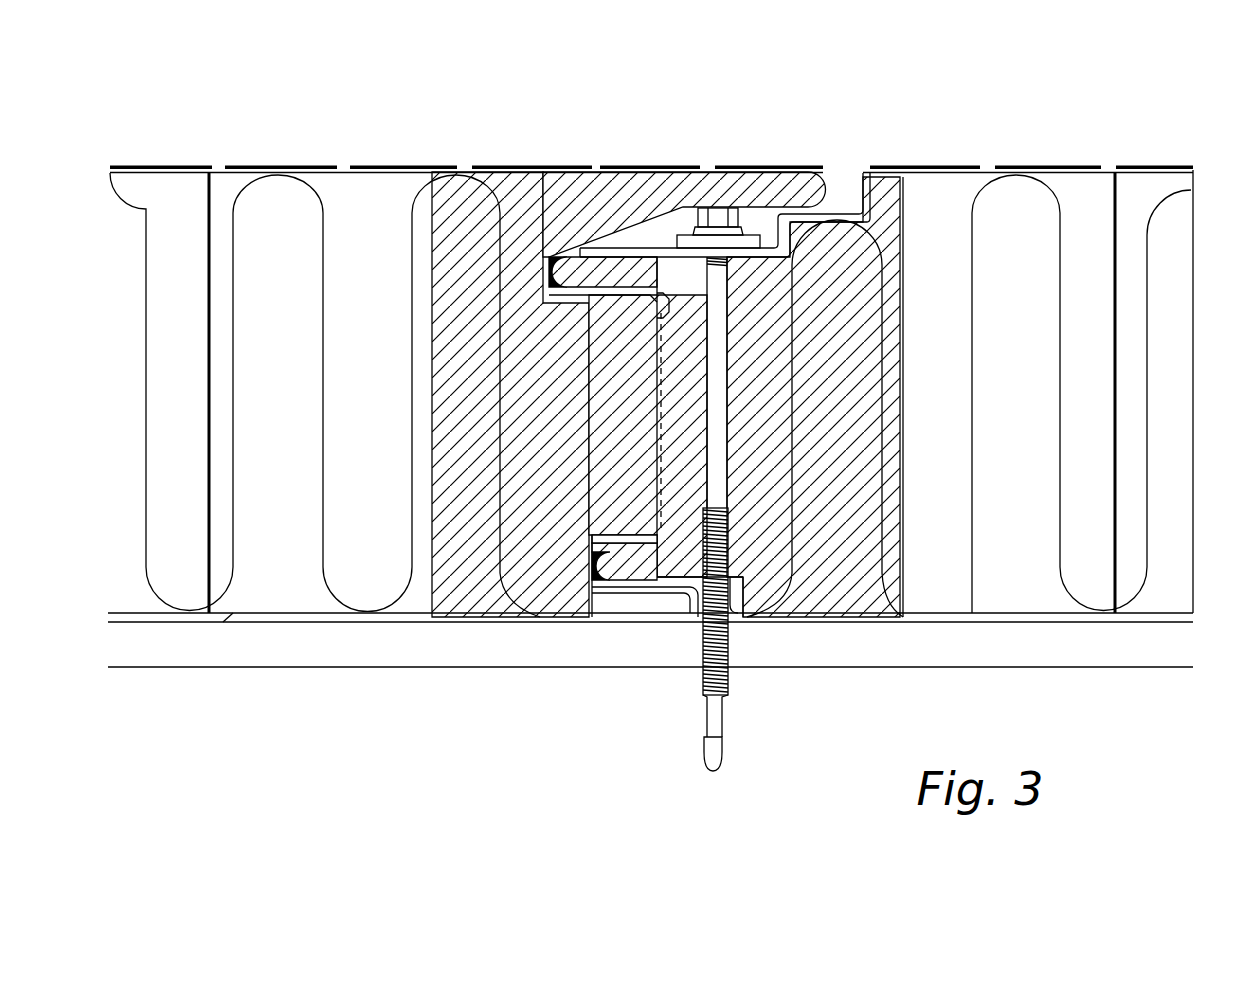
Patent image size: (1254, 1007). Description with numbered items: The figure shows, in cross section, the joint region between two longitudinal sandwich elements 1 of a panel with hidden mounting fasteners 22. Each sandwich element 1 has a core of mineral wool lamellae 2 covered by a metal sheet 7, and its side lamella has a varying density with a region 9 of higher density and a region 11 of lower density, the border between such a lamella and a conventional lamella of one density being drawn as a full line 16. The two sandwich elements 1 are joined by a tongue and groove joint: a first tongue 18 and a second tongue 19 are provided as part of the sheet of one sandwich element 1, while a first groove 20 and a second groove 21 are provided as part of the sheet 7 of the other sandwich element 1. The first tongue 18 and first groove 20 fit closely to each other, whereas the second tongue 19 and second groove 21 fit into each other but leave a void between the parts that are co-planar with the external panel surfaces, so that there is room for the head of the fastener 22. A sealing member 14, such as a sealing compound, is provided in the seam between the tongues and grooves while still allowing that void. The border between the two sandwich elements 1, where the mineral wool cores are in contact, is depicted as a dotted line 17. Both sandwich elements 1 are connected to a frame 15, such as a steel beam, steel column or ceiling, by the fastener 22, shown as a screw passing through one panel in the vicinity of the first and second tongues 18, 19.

The longitudinal sandwich element 1 is at (1162, 158).
The lamellae 2 is at (1035, 172).
The sheet 7 is at (405, 162).
The region with the higher density 9 is at (520, 426).
The region with the lower density 11 is at (262, 426).
The sealing member 14 is at (549, 262).
The frame 15 is at (230, 659).
The full line 16 is at (902, 250).
The dotted line 17 is at (657, 397).
The first tongue 18 is at (643, 590).
The second tongue 19 is at (616, 258).
The first groove 20 is at (590, 580).
The second groove 21 is at (645, 222).
The fastener 22 is at (722, 717).